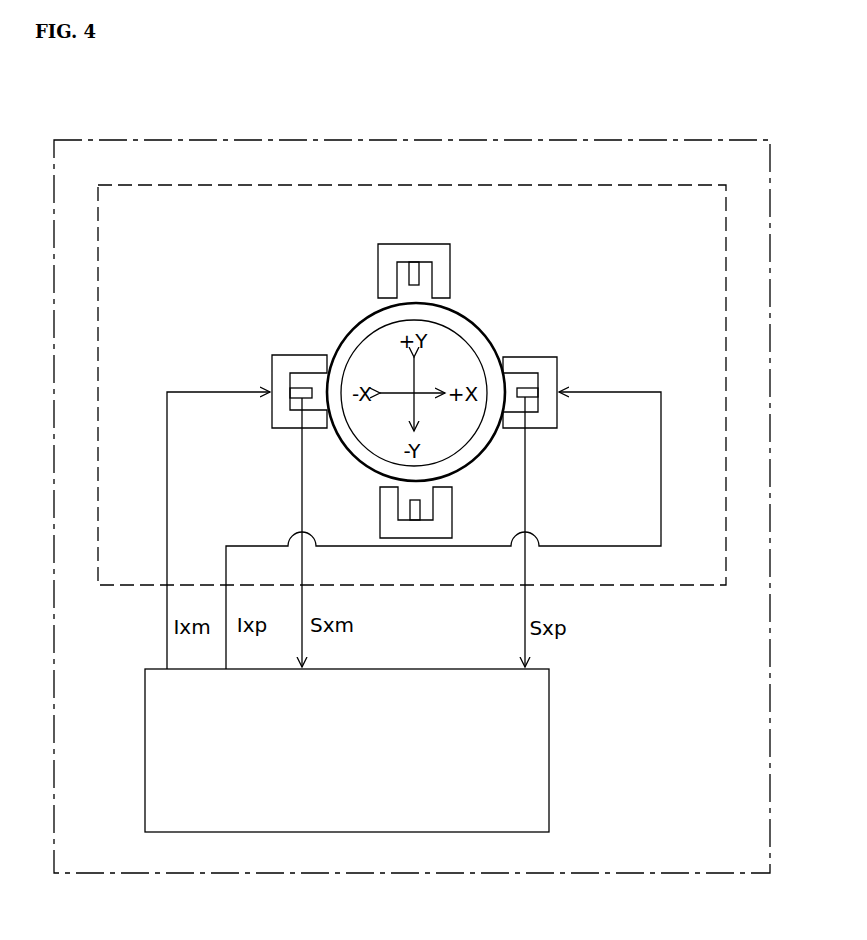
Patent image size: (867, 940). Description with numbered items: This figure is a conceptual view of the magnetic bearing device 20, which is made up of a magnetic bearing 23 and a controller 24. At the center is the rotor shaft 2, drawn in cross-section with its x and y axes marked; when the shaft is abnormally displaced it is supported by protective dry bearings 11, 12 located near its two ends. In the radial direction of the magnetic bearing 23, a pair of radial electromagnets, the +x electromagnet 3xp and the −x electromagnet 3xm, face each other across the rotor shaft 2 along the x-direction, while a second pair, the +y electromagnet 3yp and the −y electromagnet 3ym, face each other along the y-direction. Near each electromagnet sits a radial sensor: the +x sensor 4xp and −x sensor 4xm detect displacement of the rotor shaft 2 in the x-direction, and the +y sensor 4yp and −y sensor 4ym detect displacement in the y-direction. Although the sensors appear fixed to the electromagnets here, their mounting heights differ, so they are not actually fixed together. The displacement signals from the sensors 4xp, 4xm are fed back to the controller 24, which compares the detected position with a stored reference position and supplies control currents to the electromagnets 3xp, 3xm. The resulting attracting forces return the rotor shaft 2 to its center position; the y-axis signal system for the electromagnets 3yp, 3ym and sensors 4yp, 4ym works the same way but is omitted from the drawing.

The magnetic bearing device 20 is at (295, 158).
The magnetic bearing 23 is at (402, 204).
The controller 24 is at (385, 698).
The rotor shaft 2 is at (380, 343).
The protective dry bearing 11 is at (384, 388).
The protective dry bearing 12 is at (333, 350).
The −x electromagnet 3xm is at (293, 362).
The +x electromagnet 3xp is at (530, 363).
The +y electromagnet 3yp is at (443, 253).
The −y electromagnet 3ym is at (442, 498).
The −x sensor 4xm is at (299, 394).
The +x sensor 4xp is at (530, 396).
The +y sensor 4yp is at (414, 277).
The −y sensor 4ym is at (414, 513).